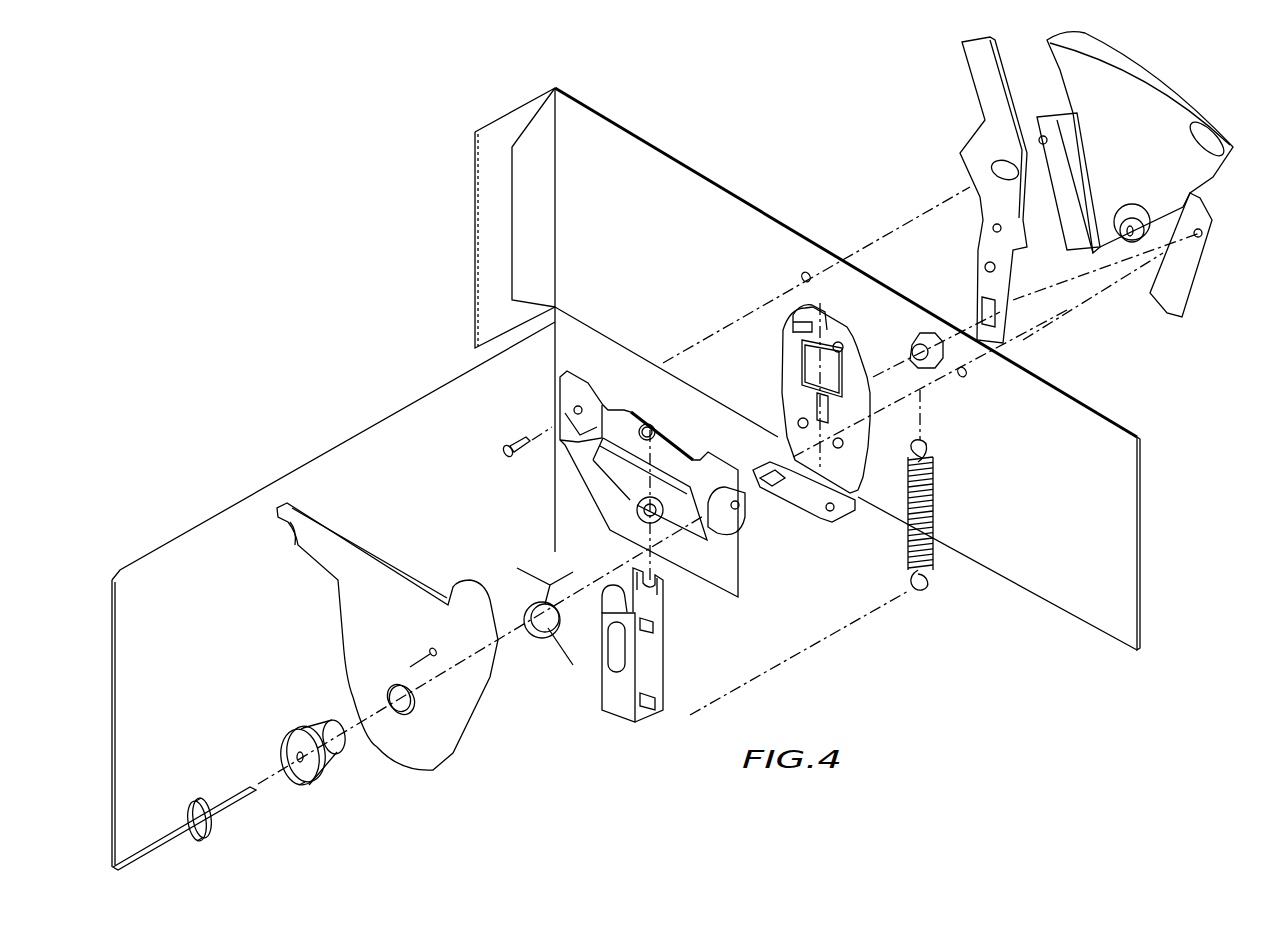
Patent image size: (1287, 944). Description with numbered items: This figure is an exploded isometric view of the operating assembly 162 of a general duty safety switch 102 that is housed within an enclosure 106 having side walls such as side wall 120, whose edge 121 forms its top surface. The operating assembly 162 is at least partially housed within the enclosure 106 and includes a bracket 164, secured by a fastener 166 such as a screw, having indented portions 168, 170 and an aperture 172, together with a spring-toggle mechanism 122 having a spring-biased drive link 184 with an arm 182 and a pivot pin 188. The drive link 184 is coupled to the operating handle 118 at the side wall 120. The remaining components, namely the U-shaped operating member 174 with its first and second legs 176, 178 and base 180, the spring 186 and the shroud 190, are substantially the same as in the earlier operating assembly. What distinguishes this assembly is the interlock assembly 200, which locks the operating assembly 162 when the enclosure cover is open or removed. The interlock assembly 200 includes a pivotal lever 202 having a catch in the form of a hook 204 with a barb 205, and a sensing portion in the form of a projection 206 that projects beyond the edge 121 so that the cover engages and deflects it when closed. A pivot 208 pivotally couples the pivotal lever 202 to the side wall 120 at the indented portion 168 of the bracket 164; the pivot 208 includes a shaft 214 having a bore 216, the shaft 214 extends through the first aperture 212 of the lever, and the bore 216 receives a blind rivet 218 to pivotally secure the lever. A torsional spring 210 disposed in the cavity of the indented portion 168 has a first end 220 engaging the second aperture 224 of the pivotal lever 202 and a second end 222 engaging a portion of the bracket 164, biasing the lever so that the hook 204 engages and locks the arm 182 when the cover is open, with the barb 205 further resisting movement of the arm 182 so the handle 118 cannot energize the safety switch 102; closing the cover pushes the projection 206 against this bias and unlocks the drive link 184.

The safety switch 102 is at (433, 222).
The enclosure 106 is at (700, 175).
The handle 118 is at (987, 212).
The side wall 120 is at (1084, 508).
The edge 121 is at (1067, 395).
The spring-toggle mechanism 122 is at (955, 582).
The operating assembly 162 is at (946, 677).
The bracket 164 is at (765, 571).
The fastener 166 is at (517, 437).
The indented portion 168 is at (742, 508).
The indented portion 170 is at (567, 403).
The aperture 172 is at (635, 510).
The U-shaped operating member 174 is at (653, 648).
The first leg 176 is at (653, 600).
The second leg 178 is at (603, 640).
The base 180 is at (653, 710).
The arm 182 is at (822, 305).
The drive link 184 is at (785, 365).
The spring 186 is at (933, 480).
The pivot pin 188 is at (922, 332).
The shroud 190 is at (1210, 167).
The interlock assembly 200 is at (338, 445).
The pivotal lever 202 is at (468, 670).
The hook 204 is at (290, 571).
The barb 205 is at (290, 535).
The projection 206 is at (470, 590).
The pivot 208 is at (352, 780).
The torsional spring 210 is at (527, 600).
The first aperture 212 is at (395, 693).
The shaft 214 is at (322, 732).
The bore 216 is at (302, 762).
The blind rivet 218 is at (218, 805).
The first end 220 is at (540, 560).
The second end 222 is at (560, 653).
The second aperture 224 is at (435, 657).